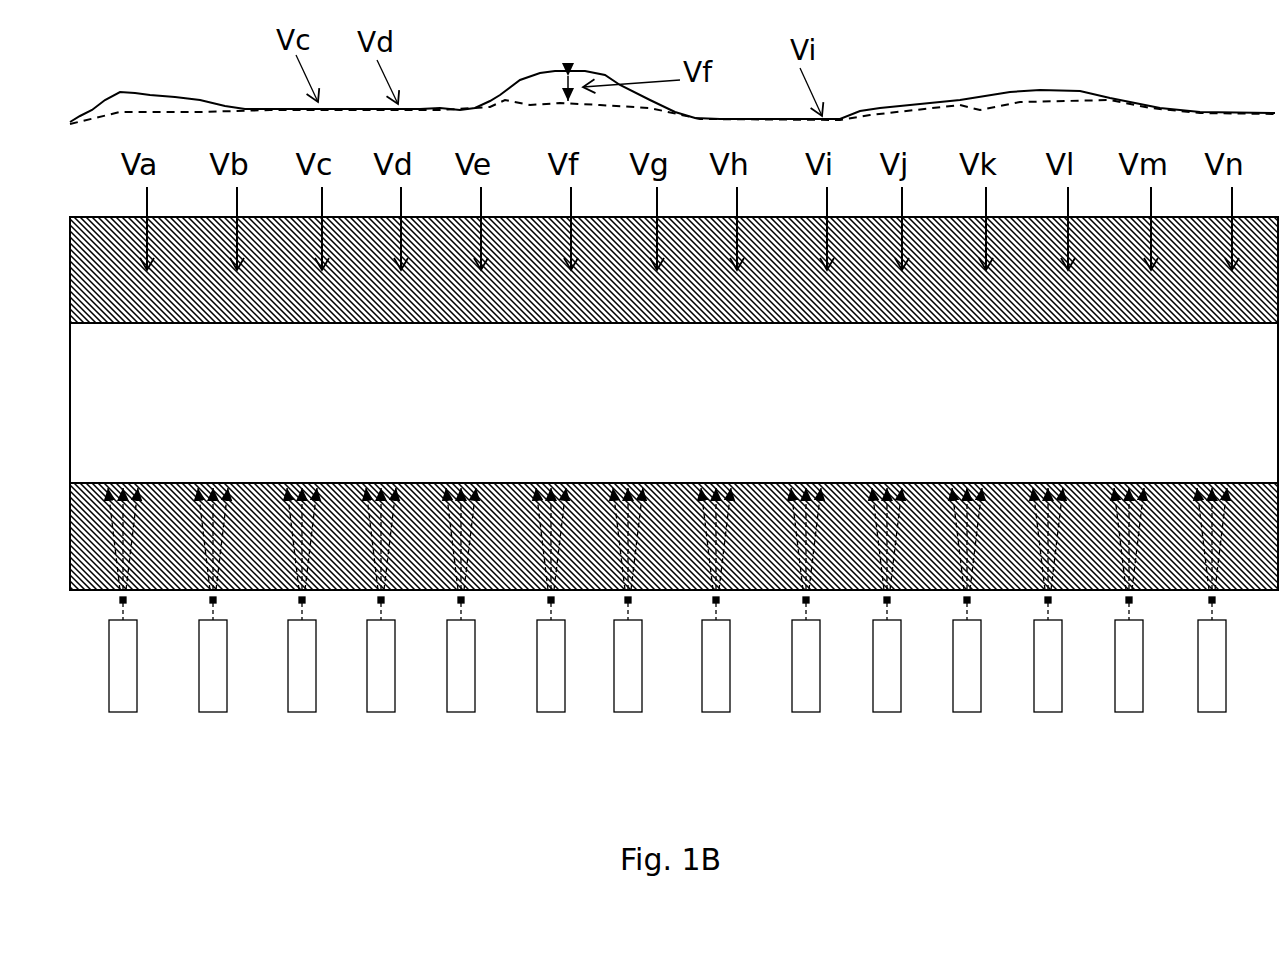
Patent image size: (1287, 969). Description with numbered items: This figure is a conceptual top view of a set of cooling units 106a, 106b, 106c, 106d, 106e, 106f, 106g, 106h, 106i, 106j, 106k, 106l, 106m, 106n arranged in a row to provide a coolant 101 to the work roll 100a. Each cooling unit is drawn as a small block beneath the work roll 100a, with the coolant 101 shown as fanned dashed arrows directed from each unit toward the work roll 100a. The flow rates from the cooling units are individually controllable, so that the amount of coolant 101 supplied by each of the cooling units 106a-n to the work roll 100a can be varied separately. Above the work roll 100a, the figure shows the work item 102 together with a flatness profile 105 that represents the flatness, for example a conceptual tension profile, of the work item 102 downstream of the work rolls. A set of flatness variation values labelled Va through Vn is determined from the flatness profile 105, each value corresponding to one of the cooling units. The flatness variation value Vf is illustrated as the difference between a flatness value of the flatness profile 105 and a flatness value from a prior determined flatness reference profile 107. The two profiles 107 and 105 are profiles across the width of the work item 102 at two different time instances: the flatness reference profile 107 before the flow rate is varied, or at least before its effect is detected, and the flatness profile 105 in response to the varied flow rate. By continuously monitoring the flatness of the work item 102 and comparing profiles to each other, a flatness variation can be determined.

The work roll 100a is at (674, 403).
The coolant 101 is at (106, 536).
The work item 102 is at (643, 410).
The flatness profile 105 is at (155, 96).
The cooling unit 106a is at (123, 713).
The cooling unit 106b is at (213, 713).
The cooling unit 106c is at (302, 713).
The cooling unit 106d is at (381, 713).
The cooling unit 106e is at (461, 713).
The cooling unit 106f is at (551, 713).
The cooling unit 106g is at (628, 713).
The cooling unit 106h is at (716, 713).
The cooling unit 106i is at (806, 713).
The cooling unit 106j is at (887, 713).
The cooling unit 106k is at (967, 713).
The cooling unit 106l is at (1048, 713).
The cooling unit 106m is at (1129, 713).
The cooling unit 106n is at (1212, 713).
The flatness reference profile 107 is at (1043, 100).